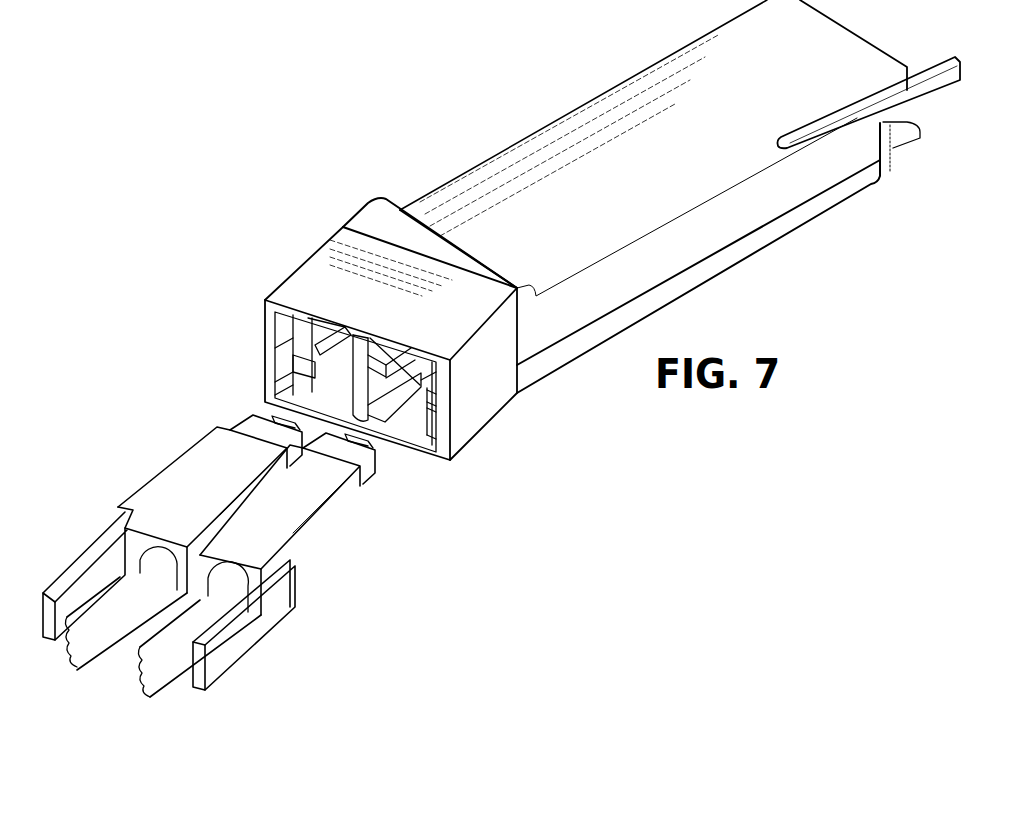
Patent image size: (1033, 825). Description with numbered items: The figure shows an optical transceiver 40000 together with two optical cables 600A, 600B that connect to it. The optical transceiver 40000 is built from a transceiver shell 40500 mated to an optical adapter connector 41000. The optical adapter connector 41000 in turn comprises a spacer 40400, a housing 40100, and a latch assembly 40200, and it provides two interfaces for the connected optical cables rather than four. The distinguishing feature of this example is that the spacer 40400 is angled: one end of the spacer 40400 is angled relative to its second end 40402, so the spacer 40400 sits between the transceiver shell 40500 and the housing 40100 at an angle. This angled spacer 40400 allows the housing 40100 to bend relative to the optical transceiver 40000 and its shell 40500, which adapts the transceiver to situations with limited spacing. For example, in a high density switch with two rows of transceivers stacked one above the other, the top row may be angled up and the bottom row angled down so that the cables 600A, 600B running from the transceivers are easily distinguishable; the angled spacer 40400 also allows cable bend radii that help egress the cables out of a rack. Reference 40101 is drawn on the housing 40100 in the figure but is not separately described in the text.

The optical transceiver 40000 is at (450, 133).
The transceiver shell 40500 is at (580, 103).
The optical adapter connector 41000 is at (386, 293).
The housing 40100 is at (283, 276).
The top wall of receptacle housing 40101 is at (340, 227).
The spacer 40400 is at (348, 218).
The second end 40402 is at (465, 245).
The latch assembly 40200 is at (297, 375).
The optical cable 600A is at (143, 483).
The optical cable 600B is at (323, 583).